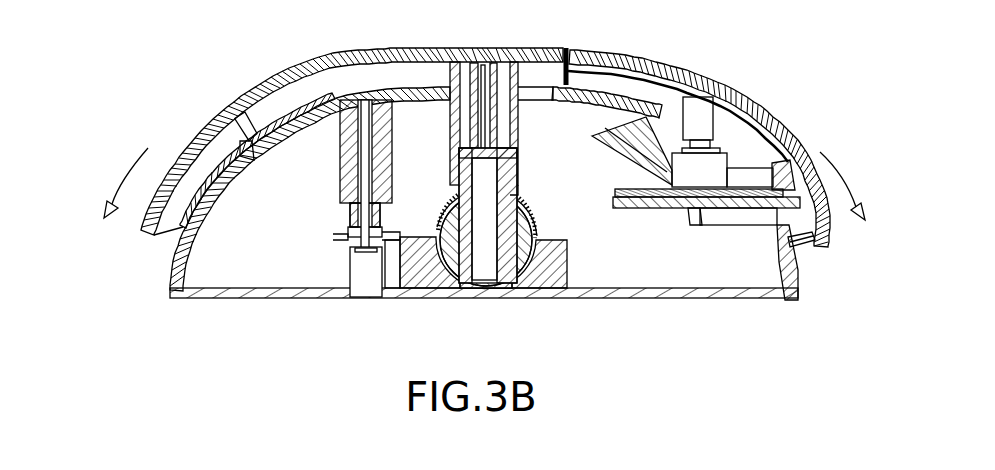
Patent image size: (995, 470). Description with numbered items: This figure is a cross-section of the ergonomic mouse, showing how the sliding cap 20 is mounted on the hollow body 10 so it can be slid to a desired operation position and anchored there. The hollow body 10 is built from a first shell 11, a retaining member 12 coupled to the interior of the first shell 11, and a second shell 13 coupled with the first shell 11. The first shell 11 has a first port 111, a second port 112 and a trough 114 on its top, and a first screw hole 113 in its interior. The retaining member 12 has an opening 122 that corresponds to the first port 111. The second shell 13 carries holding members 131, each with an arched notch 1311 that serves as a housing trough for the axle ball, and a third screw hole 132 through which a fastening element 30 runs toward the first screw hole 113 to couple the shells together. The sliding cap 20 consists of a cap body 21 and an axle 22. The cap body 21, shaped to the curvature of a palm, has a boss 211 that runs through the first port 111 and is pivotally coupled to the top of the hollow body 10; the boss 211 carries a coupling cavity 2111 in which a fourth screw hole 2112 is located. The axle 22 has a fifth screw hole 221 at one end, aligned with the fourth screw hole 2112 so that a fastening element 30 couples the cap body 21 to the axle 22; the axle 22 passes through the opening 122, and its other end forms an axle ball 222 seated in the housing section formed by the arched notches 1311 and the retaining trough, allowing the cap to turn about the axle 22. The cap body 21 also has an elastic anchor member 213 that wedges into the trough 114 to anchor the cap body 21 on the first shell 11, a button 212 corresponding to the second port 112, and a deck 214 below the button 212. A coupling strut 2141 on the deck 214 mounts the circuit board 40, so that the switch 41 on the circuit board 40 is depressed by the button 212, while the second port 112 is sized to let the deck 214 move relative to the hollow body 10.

The hollow body 10 is at (84, 225).
The first shell 11 is at (178, 240).
The first port 111 is at (537, 97).
The second port 112 is at (665, 140).
The first screw hole 113 is at (340, 178).
The trough 114 is at (233, 156).
The retaining member 12 is at (336, 237).
The second shell 13 is at (221, 294).
The holding member 131 is at (510, 293).
The arched notch 1311 is at (538, 270).
The third screw hole 132 is at (343, 240).
The sliding cap 20 is at (485, 128).
The cap body 21 is at (241, 94).
The boss 211 is at (473, 97).
The coupling cavity 2111 is at (522, 193).
The fourth screw hole 2112 is at (465, 96).
The button 212 is at (710, 86).
The elastic anchor member 213 is at (236, 128).
The deck 214 is at (797, 278).
The coupling strut 2141 is at (755, 190).
The axle 22 is at (474, 269).
The fifth screw hole 221 is at (450, 145).
The axle ball 222 is at (500, 288).
The fastening element 30 is at (363, 253).
The circuit board 40 is at (725, 119).
The switch 41 is at (678, 150).
The opening 122 is at (525, 215).